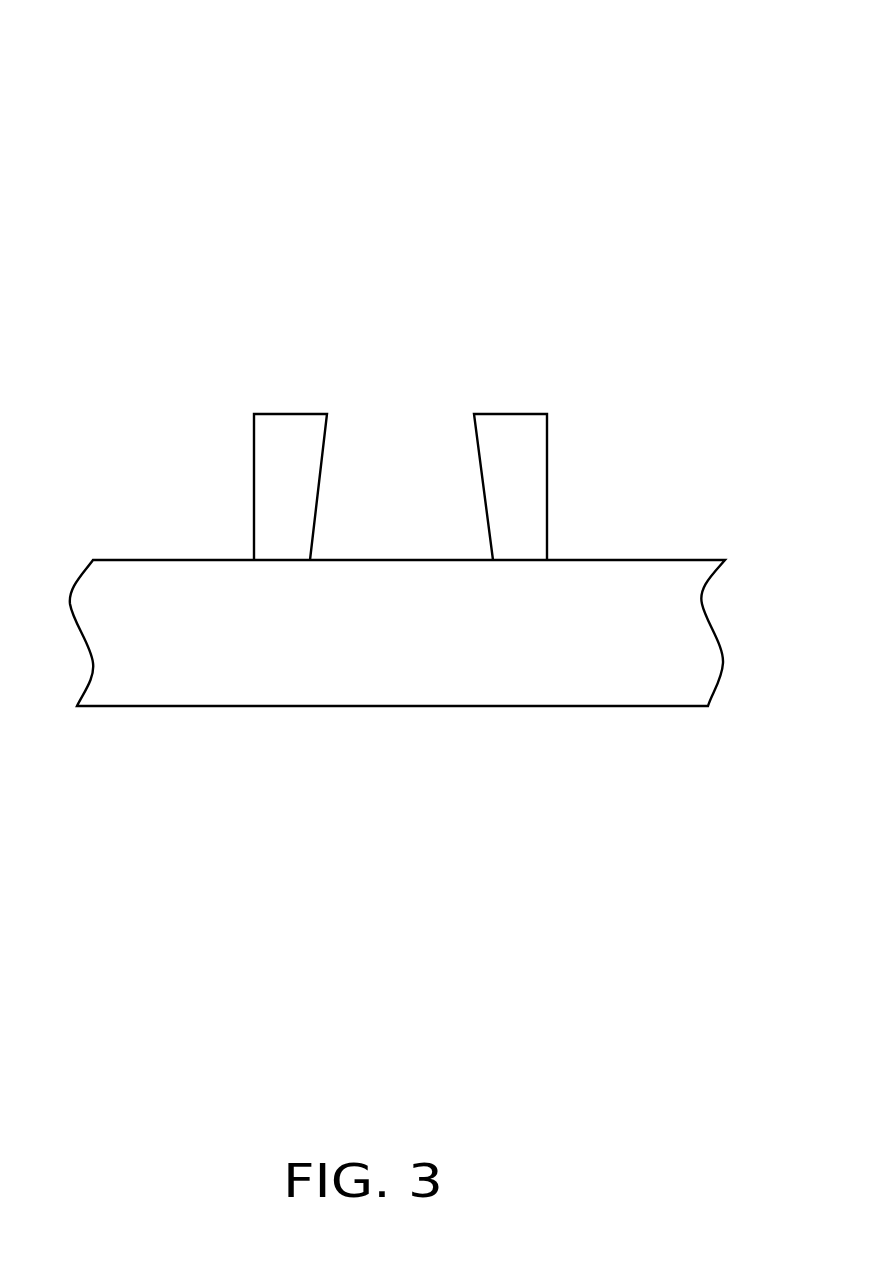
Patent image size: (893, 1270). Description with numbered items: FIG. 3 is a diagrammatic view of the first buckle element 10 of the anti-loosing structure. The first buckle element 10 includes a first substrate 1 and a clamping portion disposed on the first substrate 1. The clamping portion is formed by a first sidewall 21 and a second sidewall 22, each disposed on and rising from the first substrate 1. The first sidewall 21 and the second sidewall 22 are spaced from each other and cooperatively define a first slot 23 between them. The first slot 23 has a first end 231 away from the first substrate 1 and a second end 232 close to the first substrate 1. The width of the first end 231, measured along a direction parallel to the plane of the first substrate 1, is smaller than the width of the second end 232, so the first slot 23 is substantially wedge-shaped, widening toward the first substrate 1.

The first buckle element 10 is at (437, 40).
The first substrate 1 is at (638, 583).
The first sidewall 21 is at (268, 473).
The second sidewall 22 is at (531, 465).
The first slot 23 is at (389, 318).
The first end 231 is at (403, 422).
The second end 232 is at (368, 508).